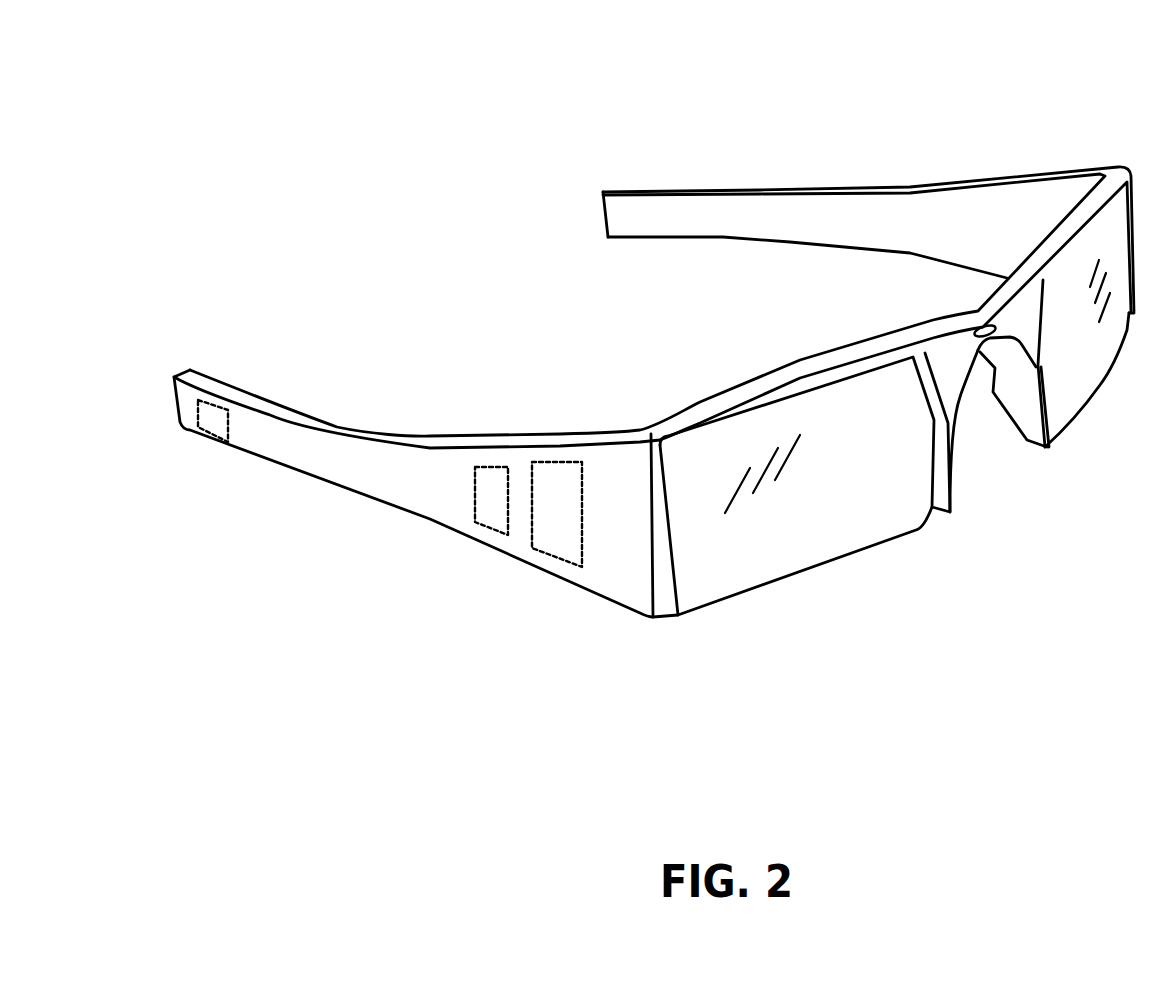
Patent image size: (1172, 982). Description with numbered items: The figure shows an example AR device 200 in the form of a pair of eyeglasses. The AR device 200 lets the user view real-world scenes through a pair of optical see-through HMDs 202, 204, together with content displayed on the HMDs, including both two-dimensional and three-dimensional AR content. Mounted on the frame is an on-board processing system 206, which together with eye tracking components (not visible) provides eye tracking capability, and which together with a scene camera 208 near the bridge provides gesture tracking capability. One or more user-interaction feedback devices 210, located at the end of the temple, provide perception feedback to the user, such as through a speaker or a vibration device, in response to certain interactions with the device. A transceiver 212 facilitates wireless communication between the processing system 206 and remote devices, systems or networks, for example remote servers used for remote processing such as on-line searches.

The AR device 200 is at (106, 64).
The optical see-through HMD 202 is at (813, 560).
The optical see-through HMD 204 is at (1087, 387).
The on-board processing system 206 is at (560, 560).
The scene camera 208 is at (975, 322).
The user-interaction feedback device 210 is at (213, 437).
The transceiver 212 is at (492, 528).